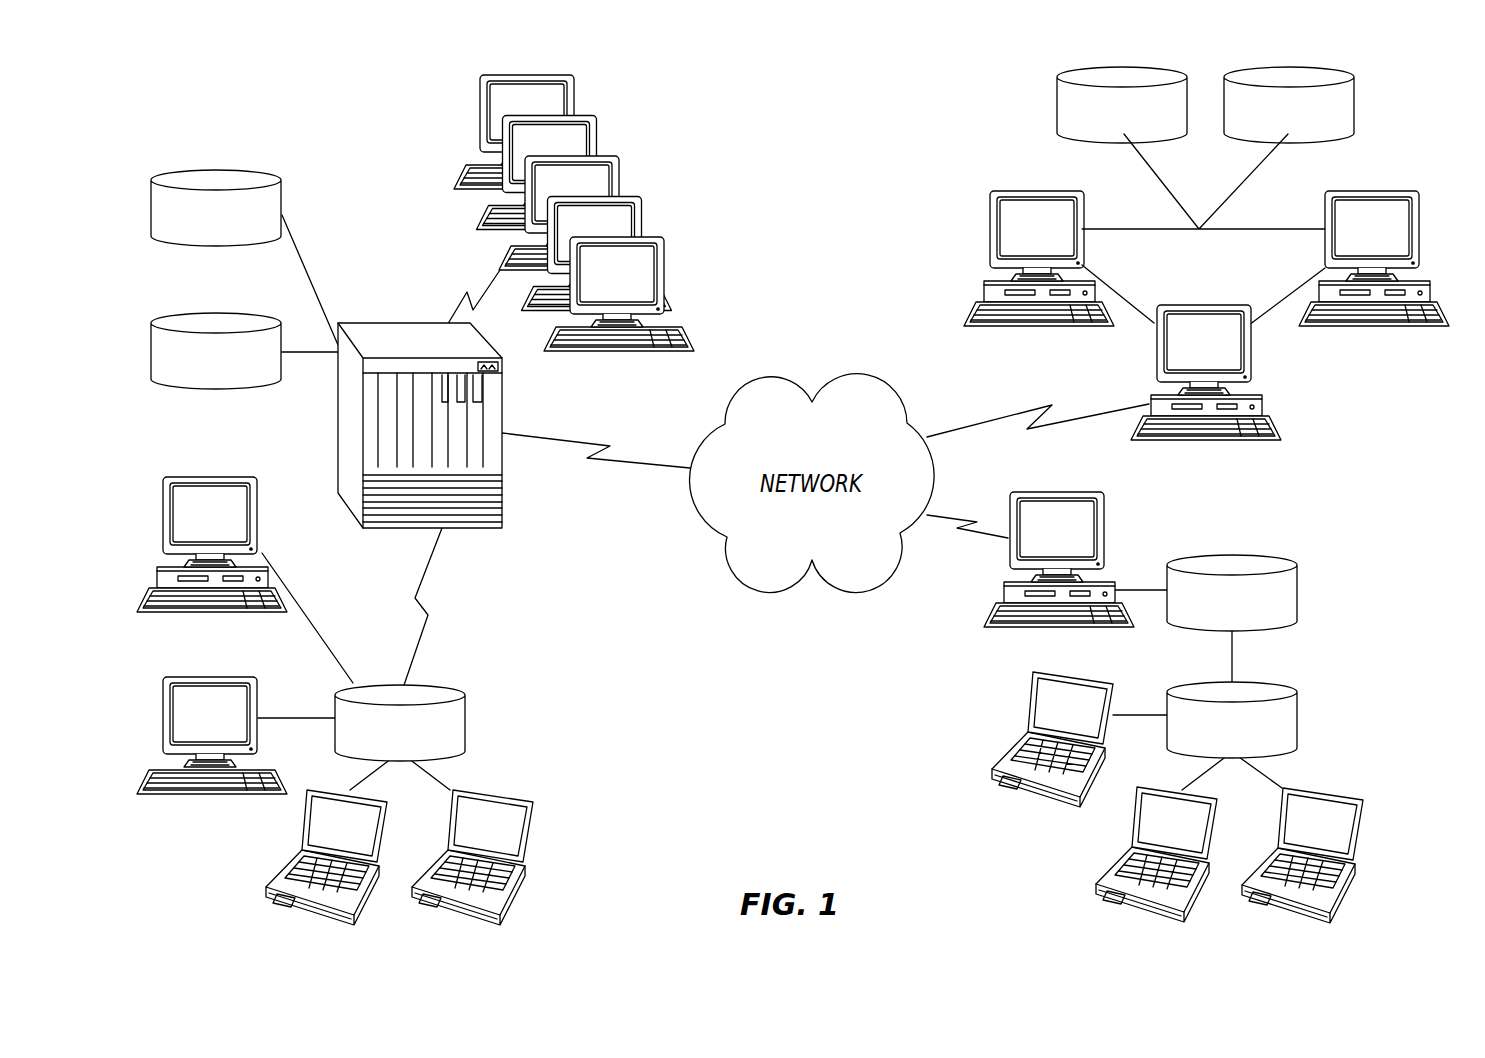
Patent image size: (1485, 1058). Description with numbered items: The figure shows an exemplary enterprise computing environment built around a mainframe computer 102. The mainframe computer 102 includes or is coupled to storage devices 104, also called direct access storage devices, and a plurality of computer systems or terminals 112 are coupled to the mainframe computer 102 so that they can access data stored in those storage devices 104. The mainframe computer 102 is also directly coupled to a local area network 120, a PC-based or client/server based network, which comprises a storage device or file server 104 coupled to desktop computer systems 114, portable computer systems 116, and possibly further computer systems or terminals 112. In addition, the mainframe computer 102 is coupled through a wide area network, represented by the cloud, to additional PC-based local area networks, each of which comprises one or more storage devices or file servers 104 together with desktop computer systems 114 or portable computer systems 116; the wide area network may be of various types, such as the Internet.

The mainframe computer 102 is at (423, 320).
The storage device 104 is at (1252, 612).
The computer systems or terminals 112 is at (636, 139).
The desktop computer system 114 is at (230, 476).
The portable computer system 116 is at (283, 882).
The local area network 120 is at (1474, 104).